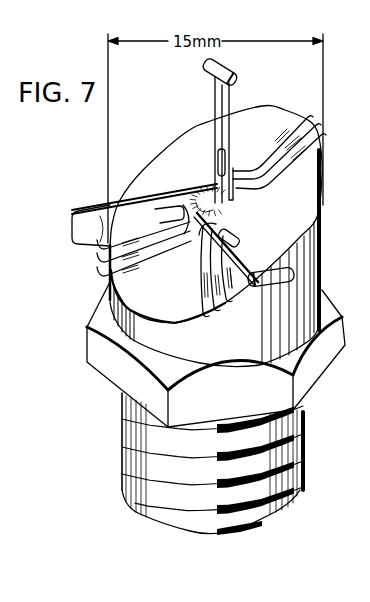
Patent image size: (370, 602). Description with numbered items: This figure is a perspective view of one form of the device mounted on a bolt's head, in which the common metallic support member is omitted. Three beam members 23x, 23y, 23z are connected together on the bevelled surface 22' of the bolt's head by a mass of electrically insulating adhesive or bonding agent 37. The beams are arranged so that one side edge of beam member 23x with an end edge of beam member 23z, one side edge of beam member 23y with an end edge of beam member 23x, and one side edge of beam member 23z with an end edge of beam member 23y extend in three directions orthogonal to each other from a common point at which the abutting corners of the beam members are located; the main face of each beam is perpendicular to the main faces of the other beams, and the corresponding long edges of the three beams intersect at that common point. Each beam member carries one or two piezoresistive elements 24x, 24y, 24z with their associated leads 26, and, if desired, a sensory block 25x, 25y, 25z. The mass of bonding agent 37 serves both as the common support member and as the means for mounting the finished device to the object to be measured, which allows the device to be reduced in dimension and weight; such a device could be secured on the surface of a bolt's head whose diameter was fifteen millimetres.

The bevelled surface 22' is at (233, 235).
The beam member 23x is at (133, 204).
The beam member 23y is at (251, 252).
The beam member 23z is at (219, 127).
The piezoresistive element 24x is at (168, 208).
The piezoresistive element 24y is at (235, 233).
The piezoresistive element 24z is at (216, 161).
The sensory block 25x is at (83, 230).
The sensory block 25y is at (257, 291).
The sensory block 25z is at (221, 78).
The leads 26 is at (206, 272).
The bonding agent 37 is at (235, 197).